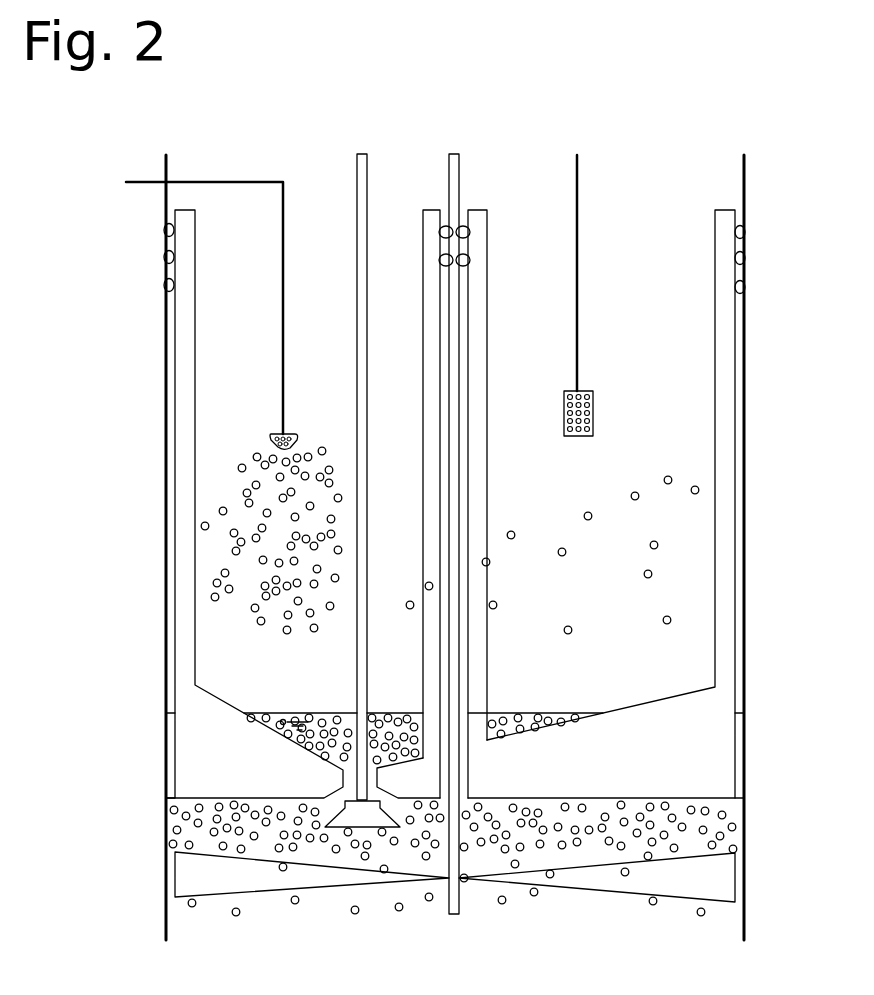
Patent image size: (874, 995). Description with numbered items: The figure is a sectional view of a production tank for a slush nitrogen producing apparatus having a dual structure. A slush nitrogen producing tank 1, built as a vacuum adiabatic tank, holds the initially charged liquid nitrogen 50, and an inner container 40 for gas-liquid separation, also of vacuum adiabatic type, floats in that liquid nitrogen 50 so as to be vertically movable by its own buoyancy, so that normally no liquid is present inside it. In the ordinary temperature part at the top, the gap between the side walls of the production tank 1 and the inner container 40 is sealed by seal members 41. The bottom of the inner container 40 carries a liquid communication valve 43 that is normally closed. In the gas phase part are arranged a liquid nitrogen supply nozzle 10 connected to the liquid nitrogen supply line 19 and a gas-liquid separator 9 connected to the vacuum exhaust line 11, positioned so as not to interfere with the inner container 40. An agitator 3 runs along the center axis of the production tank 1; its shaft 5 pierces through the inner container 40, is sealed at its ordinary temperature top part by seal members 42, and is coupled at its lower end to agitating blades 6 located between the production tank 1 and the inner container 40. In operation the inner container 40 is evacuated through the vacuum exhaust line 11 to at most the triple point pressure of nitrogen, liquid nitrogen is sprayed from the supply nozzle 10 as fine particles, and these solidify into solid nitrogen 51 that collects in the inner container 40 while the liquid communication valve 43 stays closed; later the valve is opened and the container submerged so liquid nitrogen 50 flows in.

The slush nitrogen producing tank 1 is at (746, 492).
The agitator 3 is at (455, 531).
The shaft 5 is at (448, 177).
The agitating blades 6 is at (208, 897).
The gas-liquid separator 9 is at (595, 406).
The liquid nitrogen supply nozzle 10 is at (273, 436).
The vacuum exhaust line 11 is at (578, 192).
The liquid nitrogen supply line 19 is at (207, 181).
The inner container 40 is at (187, 600).
The seal members 41 is at (167, 258).
The seal members 42 is at (461, 225).
The liquid communication valve 43 is at (368, 828).
The liquid nitrogen 50 is at (739, 806).
The solid nitrogen 51 is at (236, 487).